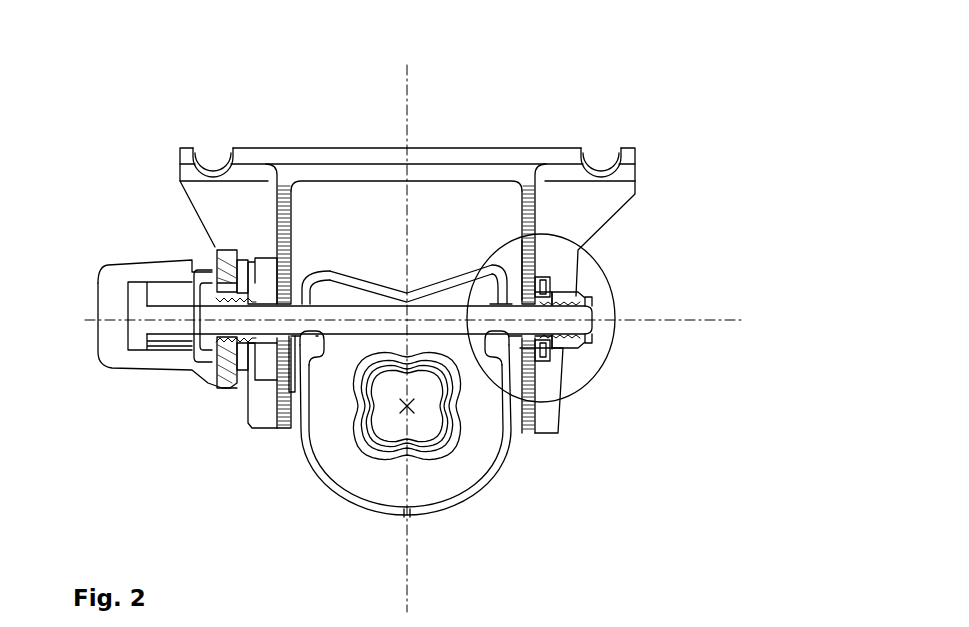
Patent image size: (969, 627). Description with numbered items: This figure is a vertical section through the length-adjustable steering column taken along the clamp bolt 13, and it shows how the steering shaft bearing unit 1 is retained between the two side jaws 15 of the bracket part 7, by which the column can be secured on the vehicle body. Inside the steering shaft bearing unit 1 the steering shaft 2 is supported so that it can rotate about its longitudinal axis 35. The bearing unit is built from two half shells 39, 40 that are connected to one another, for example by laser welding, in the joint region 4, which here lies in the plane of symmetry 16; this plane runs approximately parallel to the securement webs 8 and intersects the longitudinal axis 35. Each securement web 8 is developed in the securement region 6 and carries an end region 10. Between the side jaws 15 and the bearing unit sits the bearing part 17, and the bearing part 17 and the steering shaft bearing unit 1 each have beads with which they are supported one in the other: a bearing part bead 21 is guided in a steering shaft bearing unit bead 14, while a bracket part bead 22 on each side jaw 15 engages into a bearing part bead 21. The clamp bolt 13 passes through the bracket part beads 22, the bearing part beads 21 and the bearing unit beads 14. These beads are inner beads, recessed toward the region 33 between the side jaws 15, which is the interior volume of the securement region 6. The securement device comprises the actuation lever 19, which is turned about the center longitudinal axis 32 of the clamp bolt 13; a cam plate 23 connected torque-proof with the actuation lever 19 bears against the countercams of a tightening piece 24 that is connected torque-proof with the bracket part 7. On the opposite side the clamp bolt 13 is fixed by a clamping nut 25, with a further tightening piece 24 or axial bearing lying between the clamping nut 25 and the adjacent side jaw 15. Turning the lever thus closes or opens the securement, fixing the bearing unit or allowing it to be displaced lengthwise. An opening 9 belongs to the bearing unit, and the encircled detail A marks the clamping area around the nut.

The steering shaft bearing unit 1 is at (316, 474).
The steering shaft 2 is at (462, 478).
The joint region 4 is at (422, 565).
The securement region 6 is at (446, 512).
The bracket part 7 is at (437, 183).
The securement web 8 is at (284, 404).
The opening 9 is at (482, 290).
The end region 10 is at (528, 262).
The clamp bolt 13 is at (554, 348).
The steering shaft bearing unit bead 14 is at (326, 446).
The side jaw 15 is at (180, 184).
The plane of symmetry 16 is at (407, 172).
The bearing part 17 is at (294, 256).
The actuation lever 19 is at (137, 352).
The bearing part bead 21 is at (262, 276).
The bracket part bead 22 is at (578, 300).
The cam plate 23 is at (240, 392).
The tightening piece 24 is at (218, 374).
The clamping nut 25 is at (596, 306).
The center longitudinal axis 32 is at (108, 316).
The region 33 is at (406, 267).
The longitudinal axis 35 is at (444, 426).
The half shell 39 is at (440, 440).
The half shell 40 is at (288, 459).
The detail circle A is at (628, 350).